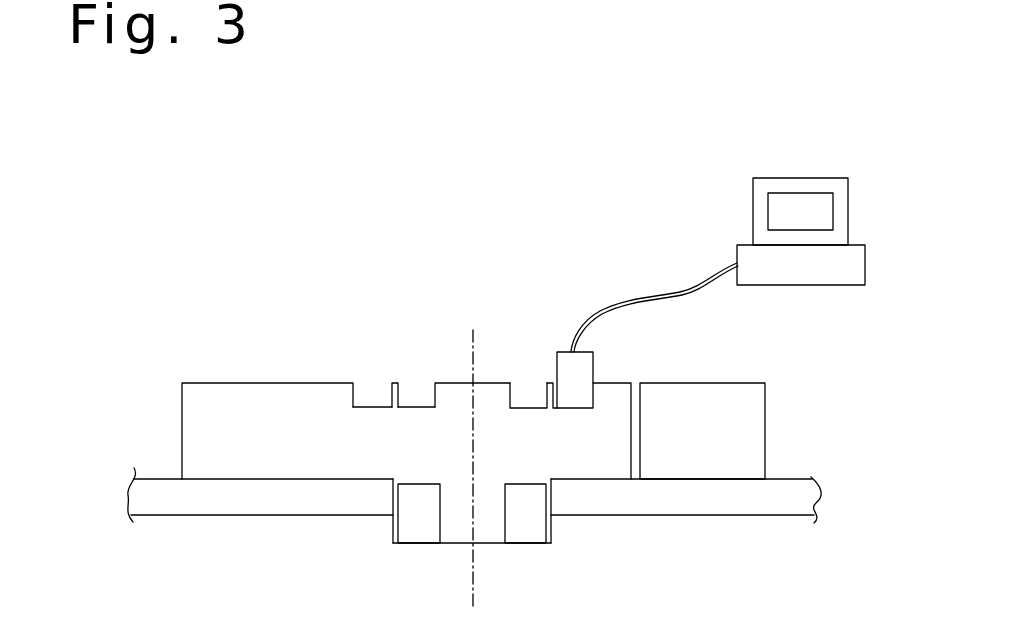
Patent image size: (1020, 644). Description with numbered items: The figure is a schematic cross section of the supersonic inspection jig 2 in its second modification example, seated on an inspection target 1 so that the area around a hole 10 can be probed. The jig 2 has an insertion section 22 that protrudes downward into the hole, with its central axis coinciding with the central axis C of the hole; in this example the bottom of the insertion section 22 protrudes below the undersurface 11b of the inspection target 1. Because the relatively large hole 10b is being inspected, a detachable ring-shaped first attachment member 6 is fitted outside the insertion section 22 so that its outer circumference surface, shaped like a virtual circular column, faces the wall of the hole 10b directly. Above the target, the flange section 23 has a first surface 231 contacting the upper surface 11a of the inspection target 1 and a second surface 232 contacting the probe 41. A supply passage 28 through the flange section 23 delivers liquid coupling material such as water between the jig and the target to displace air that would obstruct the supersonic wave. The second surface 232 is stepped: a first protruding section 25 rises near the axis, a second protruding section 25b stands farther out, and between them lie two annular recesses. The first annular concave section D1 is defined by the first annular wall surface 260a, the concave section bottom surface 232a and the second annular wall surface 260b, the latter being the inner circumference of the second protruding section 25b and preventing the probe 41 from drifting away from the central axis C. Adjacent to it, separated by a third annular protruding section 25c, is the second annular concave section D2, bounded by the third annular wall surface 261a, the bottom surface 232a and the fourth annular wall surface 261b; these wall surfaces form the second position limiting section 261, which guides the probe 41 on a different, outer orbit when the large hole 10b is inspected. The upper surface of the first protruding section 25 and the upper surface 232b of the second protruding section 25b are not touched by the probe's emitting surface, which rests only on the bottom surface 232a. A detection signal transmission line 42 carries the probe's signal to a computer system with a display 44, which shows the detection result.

The inspection target 1 is at (717, 505).
The supersonic inspection jig 2 is at (758, 408).
The first attachment member 6 is at (398, 542).
The hole 10 is at (472, 511).
The relatively large hole 10b is at (552, 513).
The upper surface 11a is at (790, 478).
The undersurface 11b is at (763, 517).
The insertion section 22 is at (458, 535).
The flange section 23 is at (758, 440).
The first protruding section 25 is at (487, 388).
The second protruding section 25b is at (713, 390).
The third annular protruding section 25c is at (549, 383).
The supply passage 28 is at (636, 480).
The first surface 231 is at (247, 483).
The second surface 232 is at (70, 387).
The concave section bottom surface 232a is at (431, 409).
The upper surface of the second protruding section 232b is at (202, 383).
The first annular wall surface 260a is at (428, 400).
The second annular wall surface 260b is at (390, 395).
The second position limiting section 261 is at (238, 317).
The third annular wall surface 261a is at (365, 392).
The fourth annular wall surface 261b is at (370, 407).
The probe 41 is at (585, 365).
The detection signal transmission line 42 is at (681, 294).
The computer system with a display 44 is at (807, 188).
The central axis C is at (472, 467).
The first annular concave section D1 is at (532, 395).
The second annular concave section D2 is at (362, 407).